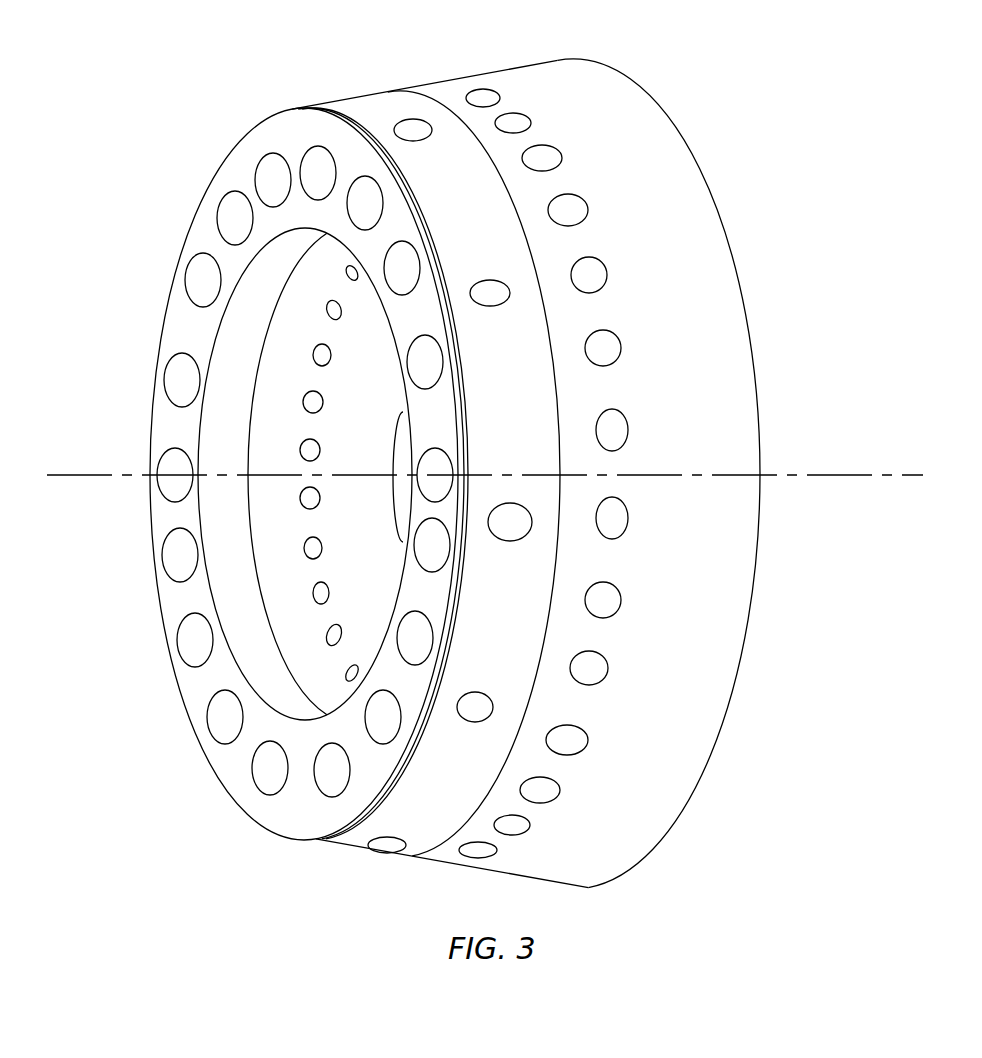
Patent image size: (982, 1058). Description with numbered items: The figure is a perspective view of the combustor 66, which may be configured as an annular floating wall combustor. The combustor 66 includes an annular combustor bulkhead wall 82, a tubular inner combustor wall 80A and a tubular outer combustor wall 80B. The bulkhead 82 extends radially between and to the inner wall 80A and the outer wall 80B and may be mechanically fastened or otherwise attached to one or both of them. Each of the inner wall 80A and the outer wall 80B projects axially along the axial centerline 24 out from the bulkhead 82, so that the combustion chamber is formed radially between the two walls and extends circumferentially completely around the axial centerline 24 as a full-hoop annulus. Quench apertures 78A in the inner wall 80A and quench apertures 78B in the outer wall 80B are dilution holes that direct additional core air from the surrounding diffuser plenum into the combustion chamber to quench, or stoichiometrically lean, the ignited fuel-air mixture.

The combustor 66 is at (766, 107).
The axial centerline 24 is at (908, 474).
The inner combustor wall 80A is at (240, 602).
The outer combustor wall 80B is at (558, 473).
The combustor bulkhead wall 82 is at (267, 812).
The quench apertures 78A is at (356, 664).
The quench apertures 78B is at (628, 527).